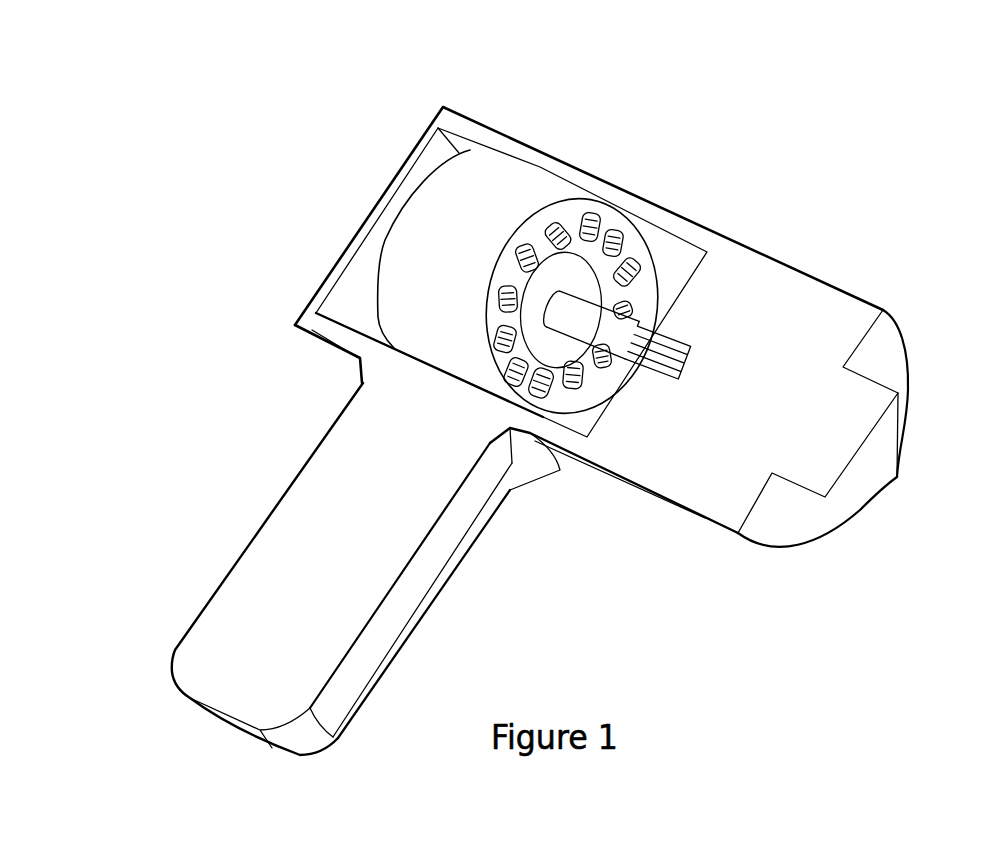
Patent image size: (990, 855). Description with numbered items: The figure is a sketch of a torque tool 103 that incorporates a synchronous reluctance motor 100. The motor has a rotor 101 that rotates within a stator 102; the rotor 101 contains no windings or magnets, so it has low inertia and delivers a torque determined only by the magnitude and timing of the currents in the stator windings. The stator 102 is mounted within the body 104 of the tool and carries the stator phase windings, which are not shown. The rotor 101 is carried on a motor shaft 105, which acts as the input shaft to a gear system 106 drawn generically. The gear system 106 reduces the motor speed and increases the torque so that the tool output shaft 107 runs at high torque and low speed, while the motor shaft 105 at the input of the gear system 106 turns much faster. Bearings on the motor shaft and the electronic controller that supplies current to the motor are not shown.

The synchronous reluctance motor 100 is at (480, 190).
The rotor 101 is at (588, 274).
The stator 102 is at (612, 218).
The torque tool 103 is at (371, 207).
The body 104 is at (332, 332).
The motor shaft 105 is at (598, 327).
The gear system 106 is at (758, 352).
The tool output shaft 107 is at (838, 442).